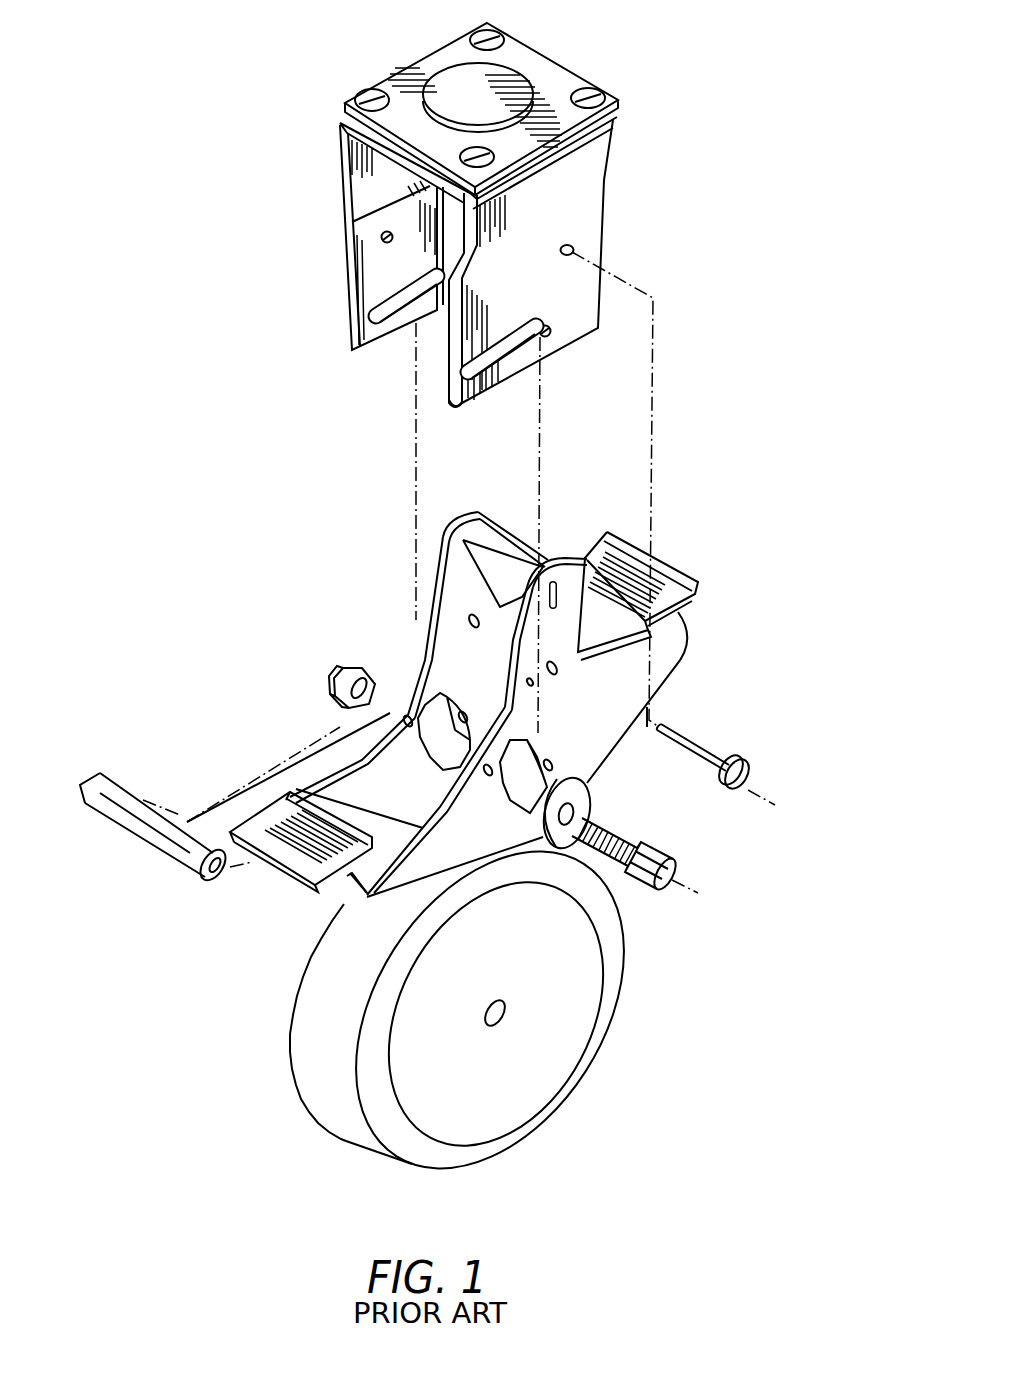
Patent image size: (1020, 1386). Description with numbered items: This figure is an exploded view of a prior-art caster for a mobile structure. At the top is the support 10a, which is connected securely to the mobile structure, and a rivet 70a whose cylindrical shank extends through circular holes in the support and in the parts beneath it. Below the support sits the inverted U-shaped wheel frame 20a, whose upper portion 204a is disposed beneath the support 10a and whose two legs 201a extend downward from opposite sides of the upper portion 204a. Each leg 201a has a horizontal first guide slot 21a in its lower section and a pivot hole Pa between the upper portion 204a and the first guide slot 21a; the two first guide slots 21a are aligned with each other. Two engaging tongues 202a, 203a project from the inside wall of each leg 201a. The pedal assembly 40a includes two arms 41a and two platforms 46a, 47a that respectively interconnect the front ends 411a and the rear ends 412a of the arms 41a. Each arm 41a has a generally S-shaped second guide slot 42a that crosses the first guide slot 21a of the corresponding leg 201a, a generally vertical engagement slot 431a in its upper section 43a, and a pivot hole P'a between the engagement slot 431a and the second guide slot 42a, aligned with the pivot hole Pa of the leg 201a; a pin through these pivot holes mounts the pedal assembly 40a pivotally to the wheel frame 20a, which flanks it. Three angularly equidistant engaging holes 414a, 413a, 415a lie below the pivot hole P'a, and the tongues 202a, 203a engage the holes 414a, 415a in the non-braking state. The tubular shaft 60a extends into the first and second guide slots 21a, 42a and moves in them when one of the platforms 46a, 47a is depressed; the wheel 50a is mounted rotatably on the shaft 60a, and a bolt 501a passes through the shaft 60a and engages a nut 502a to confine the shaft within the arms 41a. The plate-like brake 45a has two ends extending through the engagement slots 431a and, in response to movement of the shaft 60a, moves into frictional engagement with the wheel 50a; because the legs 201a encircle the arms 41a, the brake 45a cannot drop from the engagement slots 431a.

The support 10a is at (427, 55).
The rivet 70a is at (523, 70).
The wheel frame 20a is at (471, 422).
The upper portion 204a is at (343, 152).
The engaging tongue 202a is at (594, 333).
The legs 201a is at (465, 408).
The engaging tongue 203a is at (381, 237).
The first guide slot 21a is at (375, 312).
The pivot hole Pa is at (573, 247).
The pedal assembly 40a is at (481, 711).
The arms 41a is at (415, 690).
The upper section 43a is at (440, 600).
The engagement slot 431a is at (455, 525).
The brake 45a is at (508, 530).
The pivot hole P'a is at (516, 628).
The platform 47a is at (655, 562).
The platform 46a is at (297, 848).
The second guide slot 42a is at (448, 700).
The engaging hole 414a is at (407, 728).
The engaging hole 413a is at (550, 759).
The rear ends 412a is at (692, 652).
The engaging hole 415a is at (612, 730).
The front ends 411a is at (362, 895).
The nut 502a is at (341, 670).
The bolt 501a is at (617, 832).
The shaft 60a is at (137, 832).
The wheel 50a is at (308, 1021).